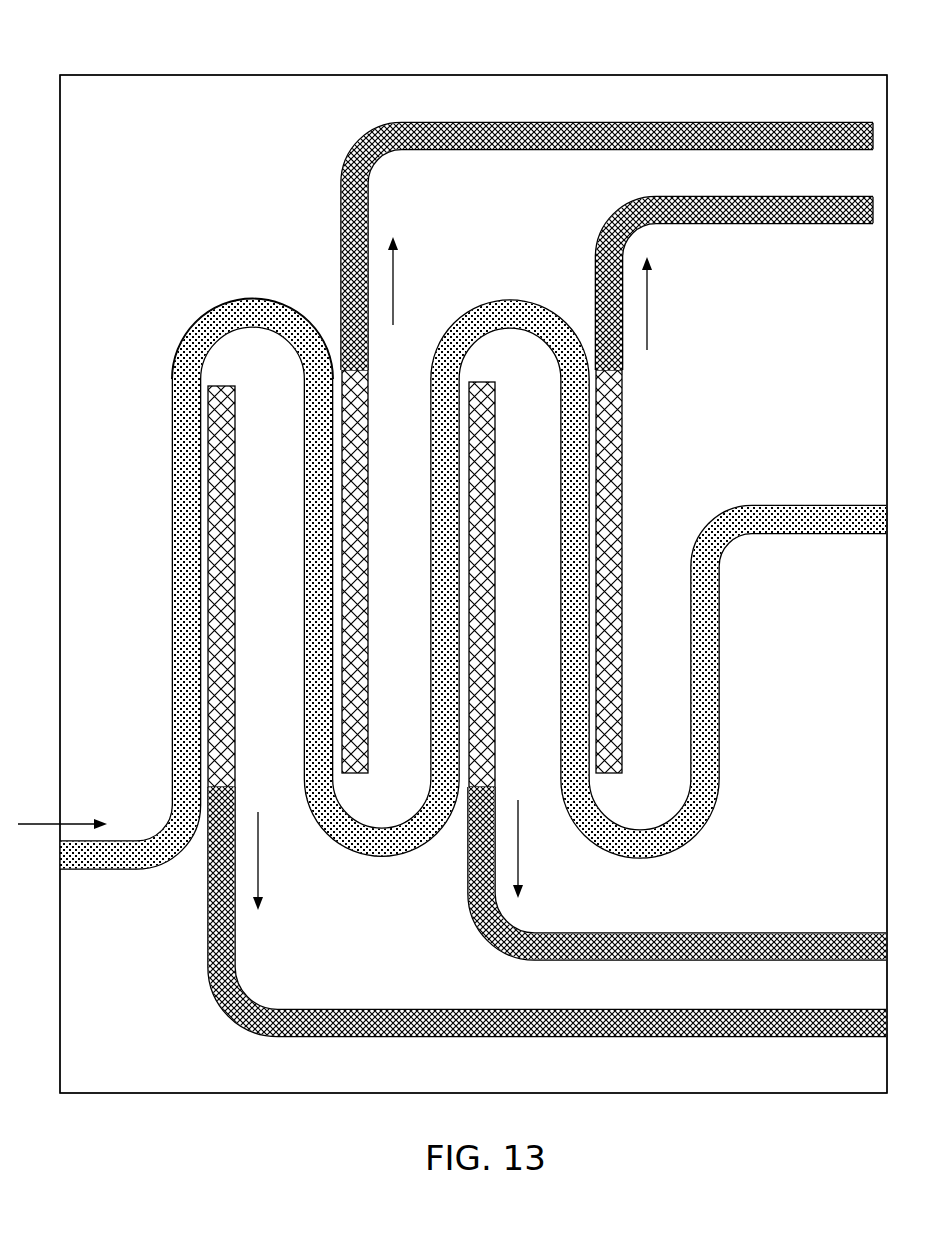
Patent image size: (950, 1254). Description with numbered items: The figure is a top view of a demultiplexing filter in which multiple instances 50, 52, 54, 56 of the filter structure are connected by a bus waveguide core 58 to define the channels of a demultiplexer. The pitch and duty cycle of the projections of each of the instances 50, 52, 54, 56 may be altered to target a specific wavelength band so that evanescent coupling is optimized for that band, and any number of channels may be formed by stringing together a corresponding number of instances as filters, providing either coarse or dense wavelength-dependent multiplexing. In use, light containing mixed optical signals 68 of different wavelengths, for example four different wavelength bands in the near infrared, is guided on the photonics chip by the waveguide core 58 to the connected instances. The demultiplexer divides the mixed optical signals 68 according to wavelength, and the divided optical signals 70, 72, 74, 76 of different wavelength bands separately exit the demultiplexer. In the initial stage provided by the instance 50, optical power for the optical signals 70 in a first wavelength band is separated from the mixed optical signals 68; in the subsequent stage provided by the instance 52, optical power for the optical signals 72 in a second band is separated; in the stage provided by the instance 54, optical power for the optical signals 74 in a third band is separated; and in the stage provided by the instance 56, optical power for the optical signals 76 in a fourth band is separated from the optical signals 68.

The instance of the structure 50 is at (168, 529).
The instance of the structure 52 is at (296, 489).
The instance of the structure 54 is at (503, 626).
The instance of the structure 56 is at (631, 489).
The bus waveguide core 58 is at (250, 318).
The mixed optical signals 68 is at (75, 824).
The optical signals 70 is at (258, 870).
The optical signals 72 is at (393, 280).
The optical signals 74 is at (518, 858).
The optical signals 76 is at (647, 318).